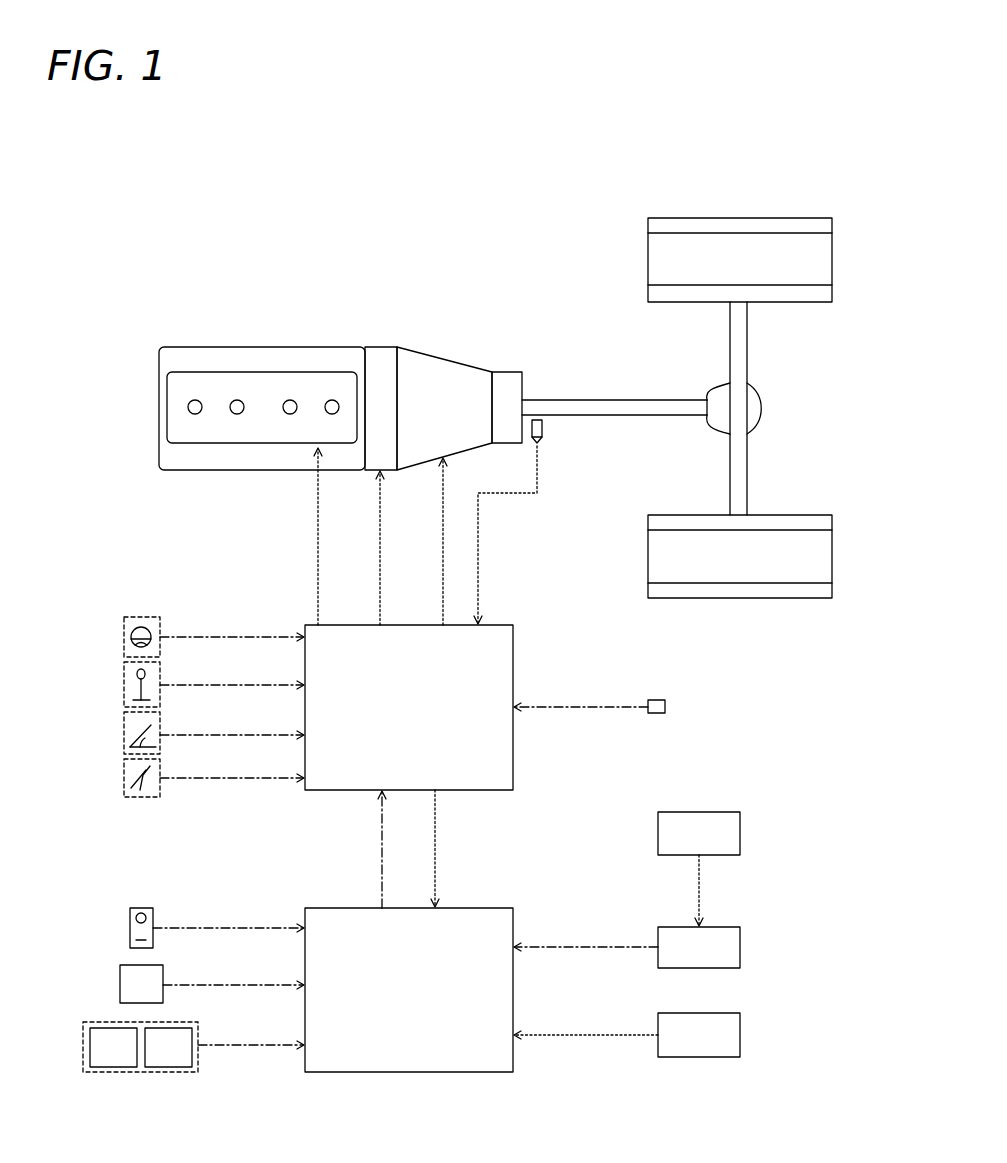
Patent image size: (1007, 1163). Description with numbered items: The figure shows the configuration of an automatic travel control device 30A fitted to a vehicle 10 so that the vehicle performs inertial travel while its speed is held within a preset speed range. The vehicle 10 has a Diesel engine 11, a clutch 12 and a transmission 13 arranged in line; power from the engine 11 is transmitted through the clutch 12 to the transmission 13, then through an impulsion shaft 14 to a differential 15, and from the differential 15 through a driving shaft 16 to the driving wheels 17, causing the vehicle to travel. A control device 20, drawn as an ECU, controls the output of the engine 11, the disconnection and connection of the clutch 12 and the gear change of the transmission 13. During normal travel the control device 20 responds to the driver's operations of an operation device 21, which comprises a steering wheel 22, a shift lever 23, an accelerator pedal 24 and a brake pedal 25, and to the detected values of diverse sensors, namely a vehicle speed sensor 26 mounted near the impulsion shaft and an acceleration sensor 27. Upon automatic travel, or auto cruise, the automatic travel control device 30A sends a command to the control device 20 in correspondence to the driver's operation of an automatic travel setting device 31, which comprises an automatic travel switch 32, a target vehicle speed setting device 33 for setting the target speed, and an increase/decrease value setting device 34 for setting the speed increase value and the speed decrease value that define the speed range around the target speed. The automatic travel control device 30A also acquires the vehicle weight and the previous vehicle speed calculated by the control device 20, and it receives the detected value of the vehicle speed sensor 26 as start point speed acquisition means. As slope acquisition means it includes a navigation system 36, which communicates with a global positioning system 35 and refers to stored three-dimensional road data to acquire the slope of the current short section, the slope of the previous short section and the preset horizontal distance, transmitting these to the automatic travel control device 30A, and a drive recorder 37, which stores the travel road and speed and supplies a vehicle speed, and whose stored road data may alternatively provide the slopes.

The vehicle 10 is at (153, 341).
The engine 11 is at (237, 347).
The clutch 12 is at (370, 347).
The transmission 13 is at (433, 352).
The impulsion shaft 14 is at (539, 400).
The differential 15 is at (710, 428).
The driving shaft 16 is at (730, 333).
The driving wheels 17 is at (648, 250).
The control device 20 is at (305, 625).
The operation device 21 is at (121, 610).
The steering wheel 22 is at (124, 637).
The shift lever 23 is at (124, 685).
The accelerator pedal 24 is at (124, 735).
The brake pedal 25 is at (124, 778).
The vehicle speed sensor 26 is at (543, 433).
The acceleration sensor 27 is at (666, 705).
The automatic travel control device 30A is at (305, 908).
The automatic travel setting device 31 is at (123, 898).
The automatic travel switch 32 is at (130, 928).
The target vehicle speed setting device 33 is at (120, 985).
The increase/decrease value setting device 34 is at (83, 1045).
The global positioning system 35 is at (740, 832).
The navigation system 36 is at (740, 945).
The drive recorder 37 is at (740, 1033).